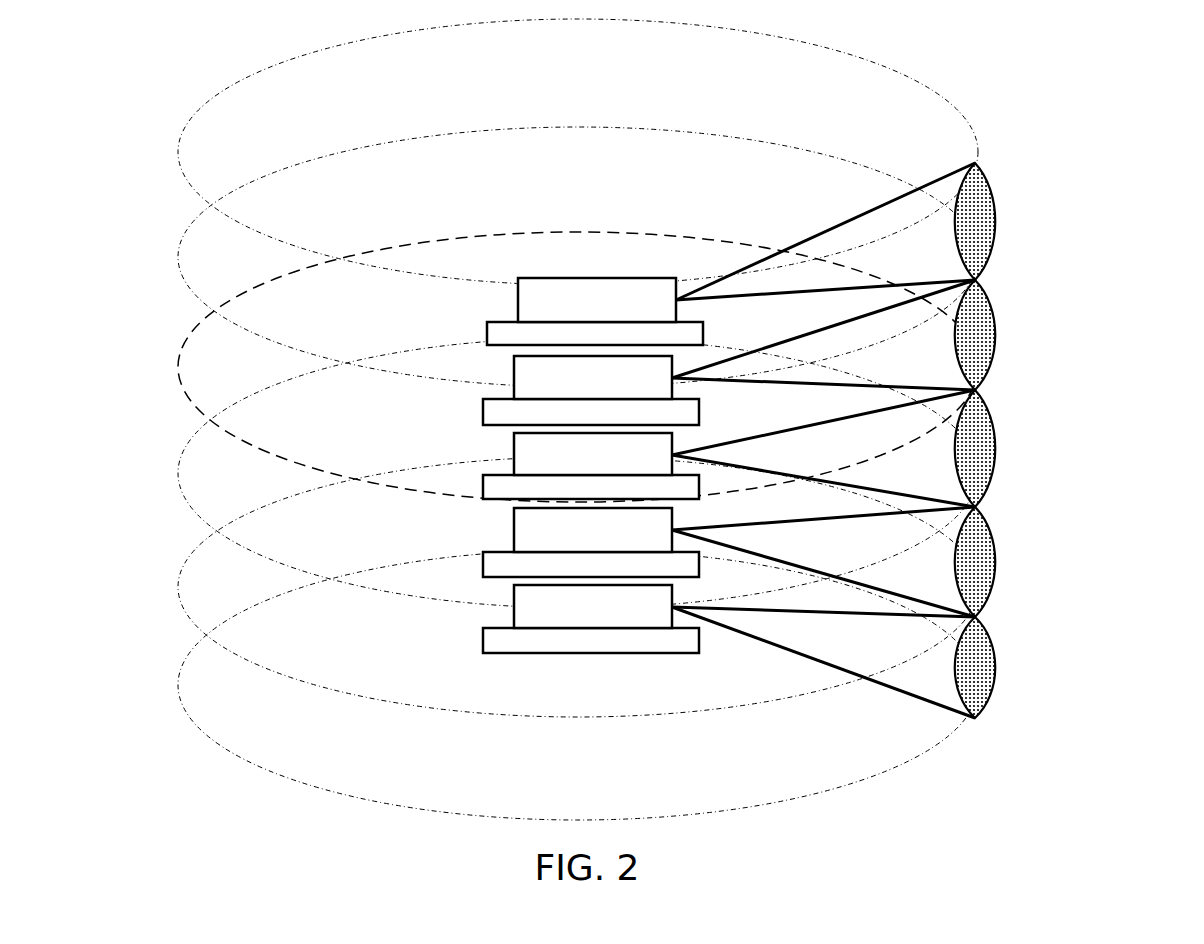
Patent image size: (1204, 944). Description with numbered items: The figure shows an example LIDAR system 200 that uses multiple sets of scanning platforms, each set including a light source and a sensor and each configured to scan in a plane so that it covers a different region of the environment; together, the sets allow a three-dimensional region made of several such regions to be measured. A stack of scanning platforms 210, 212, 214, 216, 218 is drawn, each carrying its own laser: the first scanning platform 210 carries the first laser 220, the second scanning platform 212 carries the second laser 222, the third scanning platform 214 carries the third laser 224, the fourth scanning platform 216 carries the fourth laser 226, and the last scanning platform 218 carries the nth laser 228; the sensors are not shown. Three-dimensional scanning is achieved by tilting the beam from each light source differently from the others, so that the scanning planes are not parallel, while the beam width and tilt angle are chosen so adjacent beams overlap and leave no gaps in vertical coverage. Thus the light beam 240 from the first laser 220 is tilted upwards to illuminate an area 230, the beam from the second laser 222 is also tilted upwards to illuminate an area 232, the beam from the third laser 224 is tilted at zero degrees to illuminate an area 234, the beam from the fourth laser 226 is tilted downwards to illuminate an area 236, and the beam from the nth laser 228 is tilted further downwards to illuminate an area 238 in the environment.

The LIDAR system 200 is at (1158, 62).
The scanning platform 210 is at (595, 334).
The scanning platform 212 is at (591, 411).
The scanning platform 214 is at (591, 486).
The scanning platform 216 is at (591, 563).
The scanning platform 218 is at (591, 639).
The laser 1 220 is at (570, 278).
The laser 2 222 is at (514, 372).
The laser 3 224 is at (514, 455).
The laser 4 226 is at (514, 522).
The laser n 228 is at (514, 607).
The area 230 is at (997, 216).
The area 232 is at (997, 334).
The area 234 is at (997, 447).
The area 236 is at (997, 561).
The area 238 is at (997, 671).
The light beam 240 is at (808, 228).